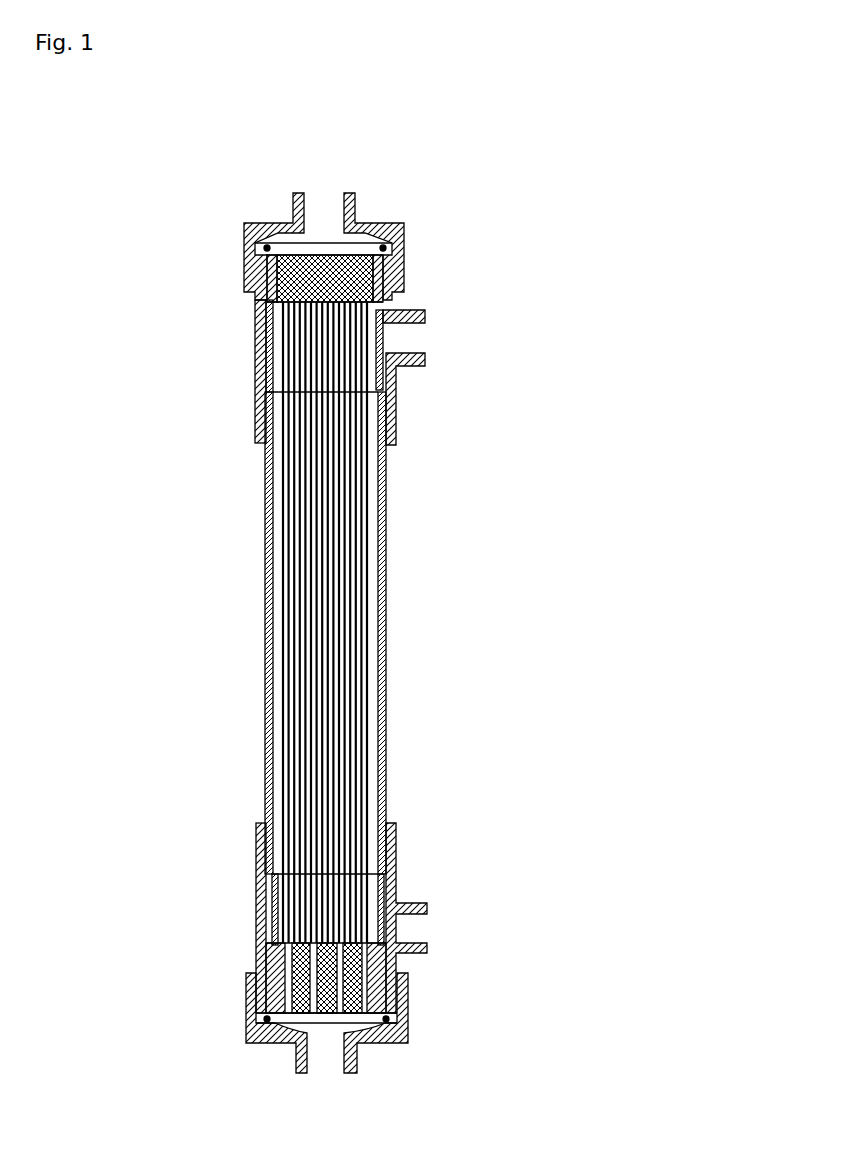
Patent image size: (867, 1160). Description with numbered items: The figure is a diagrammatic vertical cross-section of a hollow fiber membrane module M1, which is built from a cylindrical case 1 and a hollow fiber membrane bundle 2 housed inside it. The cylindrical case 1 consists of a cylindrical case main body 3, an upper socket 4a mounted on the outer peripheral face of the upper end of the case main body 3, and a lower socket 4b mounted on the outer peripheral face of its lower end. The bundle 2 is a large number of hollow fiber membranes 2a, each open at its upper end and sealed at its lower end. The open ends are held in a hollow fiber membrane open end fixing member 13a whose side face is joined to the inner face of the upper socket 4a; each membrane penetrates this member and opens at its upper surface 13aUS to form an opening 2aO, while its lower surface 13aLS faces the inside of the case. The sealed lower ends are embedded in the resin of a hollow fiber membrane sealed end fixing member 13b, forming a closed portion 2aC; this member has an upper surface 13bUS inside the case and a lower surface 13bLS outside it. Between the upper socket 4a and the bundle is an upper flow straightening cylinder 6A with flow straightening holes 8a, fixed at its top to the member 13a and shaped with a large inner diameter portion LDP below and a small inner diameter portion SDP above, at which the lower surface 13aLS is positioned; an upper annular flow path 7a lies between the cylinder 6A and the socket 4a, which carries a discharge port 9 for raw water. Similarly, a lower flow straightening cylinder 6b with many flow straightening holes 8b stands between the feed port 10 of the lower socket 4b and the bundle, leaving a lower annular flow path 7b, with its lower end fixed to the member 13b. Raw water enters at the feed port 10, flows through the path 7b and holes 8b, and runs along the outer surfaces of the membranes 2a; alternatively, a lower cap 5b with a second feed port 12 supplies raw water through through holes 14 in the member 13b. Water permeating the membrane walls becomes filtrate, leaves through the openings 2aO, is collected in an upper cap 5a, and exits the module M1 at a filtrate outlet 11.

The hollow fiber membrane module M1 is at (222, 693).
The cylindrical case 1 is at (268, 668).
The hollow fiber membrane bundle 2 is at (363, 573).
The hollow fiber membrane 2a is at (335, 608).
The opening 2aO is at (355, 250).
The closed portion 2aC is at (352, 975).
The cylindrical case main body 3 is at (263, 580).
The upper socket 4a is at (397, 405).
The lower socket 4b is at (398, 855).
The upper cap 5a is at (404, 238).
The lower cap 5b is at (410, 1010).
The upper flow straightening cylinder 6A is at (276, 355).
The lower flow straightening cylinder 6b is at (273, 912).
The upper annular flow path 7a is at (383, 377).
The lower annular flow path 7b is at (385, 897).
The flow straightening holes 8a is at (268, 352).
The flow straightening holes 8b is at (272, 925).
The discharge port 9 is at (410, 338).
The feed port 10 is at (412, 932).
The filtrate outlet 11 is at (320, 203).
The second feed port 12 is at (325, 1063).
The hollow fiber membrane open end fixing member 13a is at (393, 280).
The upper surface 13aUS is at (297, 250).
The lower surface 13aLS is at (305, 312).
The hollow fiber membrane sealed end fixing member 13b is at (388, 968).
The upper surface 13bUS is at (317, 943).
The lower surface 13bLS is at (300, 1015).
The through holes 14 is at (272, 1022).
The small inner diameter portion SDP is at (250, 292).
The large inner diameter portion LDP is at (370, 300).